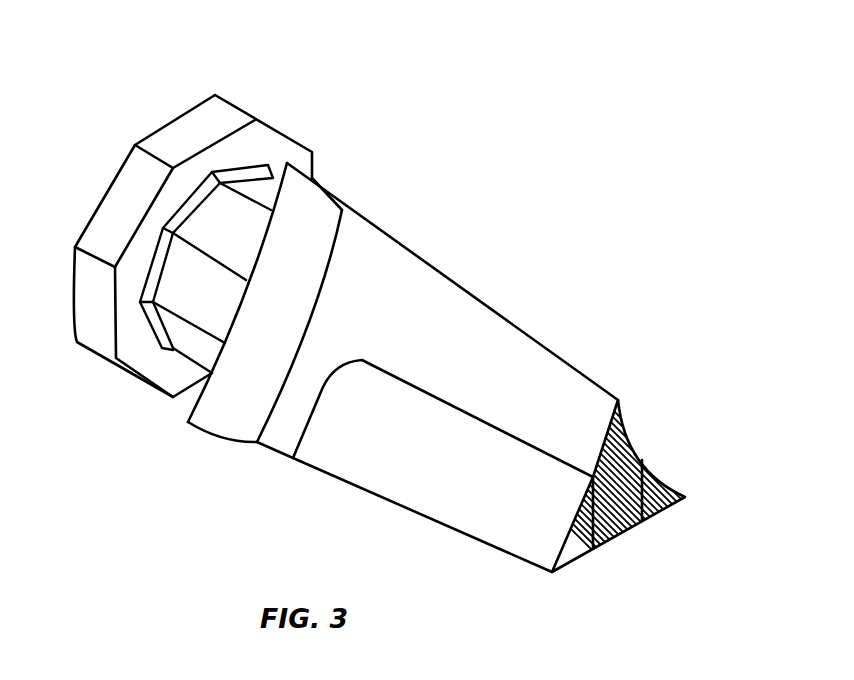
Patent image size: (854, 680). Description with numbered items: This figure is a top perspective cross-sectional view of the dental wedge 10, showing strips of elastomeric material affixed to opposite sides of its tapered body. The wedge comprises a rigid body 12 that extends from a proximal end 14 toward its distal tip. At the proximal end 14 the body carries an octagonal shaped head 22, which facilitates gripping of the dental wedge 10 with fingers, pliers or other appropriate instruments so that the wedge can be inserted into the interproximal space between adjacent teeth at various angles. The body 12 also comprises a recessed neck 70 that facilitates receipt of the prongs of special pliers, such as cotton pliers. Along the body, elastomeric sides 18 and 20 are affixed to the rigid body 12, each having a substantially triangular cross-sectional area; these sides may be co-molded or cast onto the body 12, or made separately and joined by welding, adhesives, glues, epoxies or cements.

The dental wedge 10 is at (205, 542).
The body 12 is at (372, 258).
The proximal end 14 is at (290, 101).
The elastomeric side 18 is at (665, 480).
The elastomeric side 20 is at (490, 507).
The head 22 is at (157, 152).
The recessed neck 70 is at (255, 188).